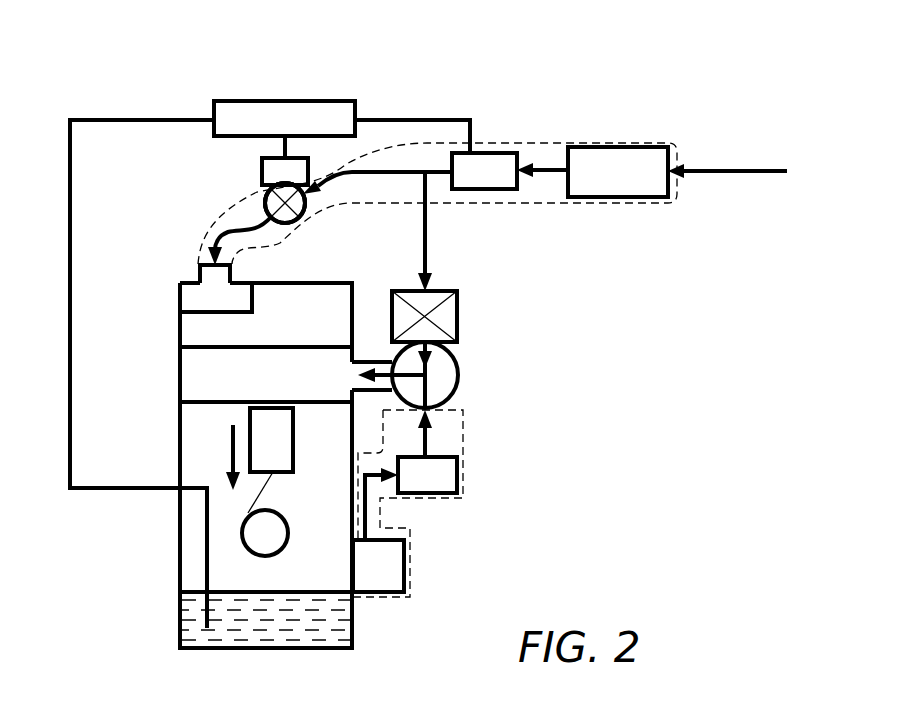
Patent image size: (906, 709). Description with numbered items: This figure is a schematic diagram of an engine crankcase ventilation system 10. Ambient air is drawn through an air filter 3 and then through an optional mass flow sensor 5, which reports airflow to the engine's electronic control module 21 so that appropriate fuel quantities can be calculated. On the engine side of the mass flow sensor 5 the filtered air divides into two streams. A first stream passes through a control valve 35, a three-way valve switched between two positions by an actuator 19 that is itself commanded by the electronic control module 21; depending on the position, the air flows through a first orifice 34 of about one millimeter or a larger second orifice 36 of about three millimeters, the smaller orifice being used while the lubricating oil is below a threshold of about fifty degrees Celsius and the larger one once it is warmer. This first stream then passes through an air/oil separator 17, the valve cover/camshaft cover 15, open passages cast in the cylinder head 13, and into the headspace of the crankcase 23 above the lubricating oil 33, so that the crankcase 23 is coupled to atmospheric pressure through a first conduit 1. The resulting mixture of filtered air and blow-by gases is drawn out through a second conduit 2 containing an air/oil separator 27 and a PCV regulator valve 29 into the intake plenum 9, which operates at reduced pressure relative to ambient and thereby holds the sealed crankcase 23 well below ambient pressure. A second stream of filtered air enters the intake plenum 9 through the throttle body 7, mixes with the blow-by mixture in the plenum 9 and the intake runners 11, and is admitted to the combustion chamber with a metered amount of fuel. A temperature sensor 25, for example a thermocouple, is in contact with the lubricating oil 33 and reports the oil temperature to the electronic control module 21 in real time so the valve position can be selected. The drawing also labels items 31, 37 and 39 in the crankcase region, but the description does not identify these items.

The first conduit 1 is at (427, 143).
The second conduit 2 is at (410, 555).
The air filter 3 is at (625, 158).
The mass flow sensor 5 is at (487, 160).
The throttle body 7 is at (445, 312).
The intake plenum 9 is at (455, 375).
The engine crankcase ventilation system 10 is at (88, 90).
The intake runners 11 is at (367, 362).
The cylinder head 13 is at (185, 378).
The valve cover/camshaft cover 15 is at (182, 330).
The air/oil separator 17 is at (185, 298).
The actuator 19 is at (268, 170).
The electronic control module 21 is at (283, 101).
The crankcase headspace 23 is at (180, 507).
The temperature sensor 25 is at (205, 547).
The air/oil separator 27 is at (397, 567).
The PCV regulator valve 29 is at (447, 475).
The fuel flow 31 is at (228, 456).
The lubricating oil 33 is at (340, 620).
The first orifice 34 is at (305, 212).
The control valve 35 is at (268, 208).
The second orifice 36 is at (285, 203).
The pressure sensor 37 is at (270, 460).
The fuel pump 39 is at (265, 533).